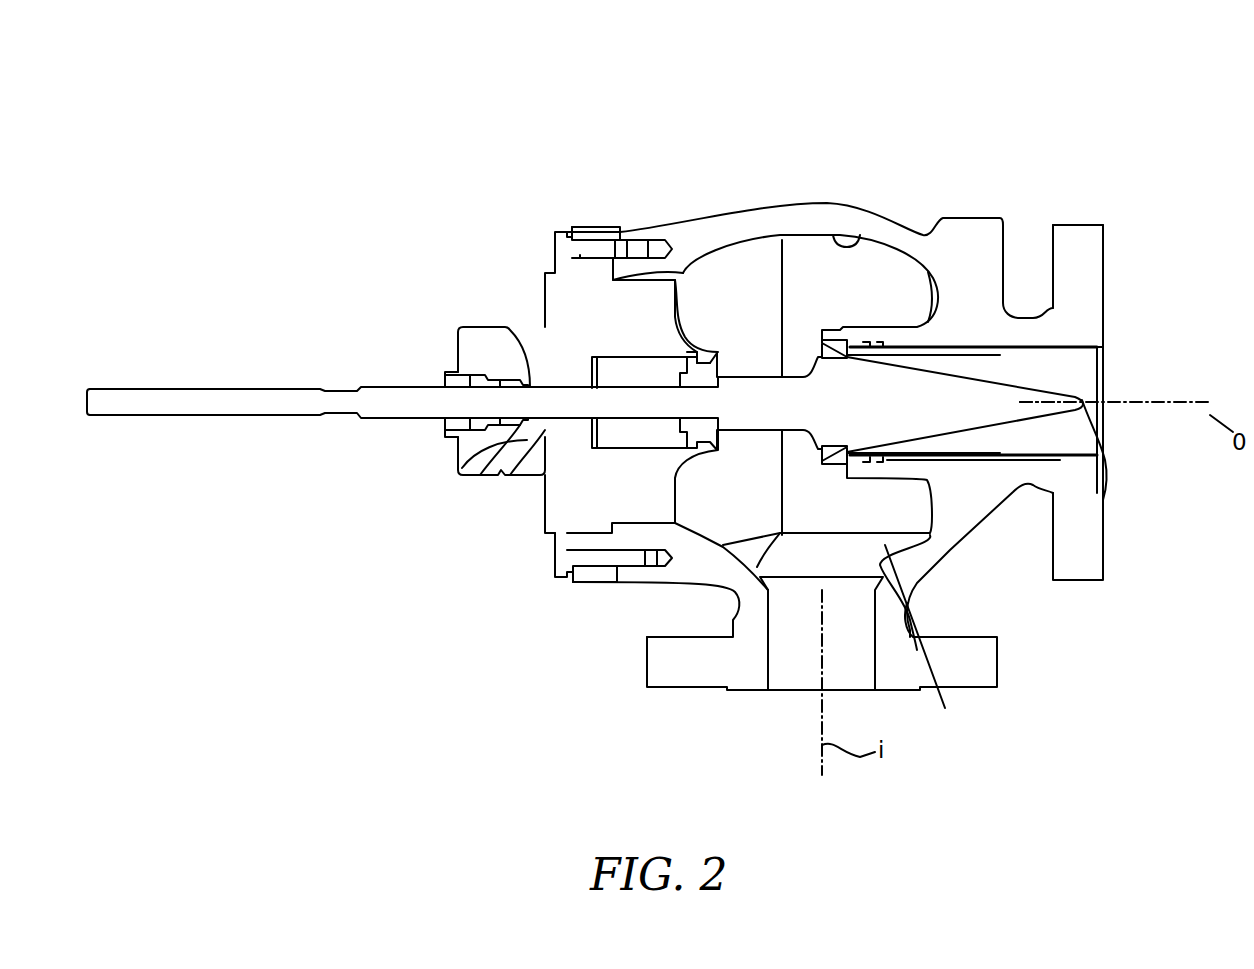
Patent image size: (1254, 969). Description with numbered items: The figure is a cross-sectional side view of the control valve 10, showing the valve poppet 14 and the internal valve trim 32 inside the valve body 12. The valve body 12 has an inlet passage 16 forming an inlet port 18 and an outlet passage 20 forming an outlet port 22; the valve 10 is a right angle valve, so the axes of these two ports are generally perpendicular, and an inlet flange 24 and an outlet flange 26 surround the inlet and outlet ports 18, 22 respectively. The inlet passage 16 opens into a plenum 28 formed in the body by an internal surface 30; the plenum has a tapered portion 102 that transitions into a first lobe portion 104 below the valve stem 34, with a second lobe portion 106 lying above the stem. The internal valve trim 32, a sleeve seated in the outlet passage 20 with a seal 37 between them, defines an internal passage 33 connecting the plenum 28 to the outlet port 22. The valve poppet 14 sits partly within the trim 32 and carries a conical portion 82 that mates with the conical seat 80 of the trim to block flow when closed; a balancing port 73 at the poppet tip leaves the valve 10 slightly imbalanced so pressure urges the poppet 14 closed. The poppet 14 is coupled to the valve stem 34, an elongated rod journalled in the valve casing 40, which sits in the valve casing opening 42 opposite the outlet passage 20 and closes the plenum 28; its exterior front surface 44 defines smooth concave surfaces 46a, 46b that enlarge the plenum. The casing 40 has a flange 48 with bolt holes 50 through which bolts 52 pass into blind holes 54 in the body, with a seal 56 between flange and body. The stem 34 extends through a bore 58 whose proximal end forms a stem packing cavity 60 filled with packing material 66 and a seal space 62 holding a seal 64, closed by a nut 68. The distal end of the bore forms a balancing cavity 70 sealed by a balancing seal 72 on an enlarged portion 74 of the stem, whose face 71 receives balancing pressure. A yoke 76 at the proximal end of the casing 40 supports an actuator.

The valve 10 is at (860, 114).
The valve body 12 is at (707, 243).
The valve poppet 14 is at (913, 420).
The inlet passage 16 is at (767, 660).
The inlet port 18 is at (833, 690).
The outlet passage 20 is at (1105, 353).
The outlet port 22 is at (1103, 403).
The inlet flange 24 is at (665, 688).
The outlet flange 26 is at (1103, 253).
The plenum 28 is at (820, 323).
The internal surface 30 is at (870, 237).
The internal valve trim 32 is at (980, 460).
The internal passage 33 is at (1078, 385).
The valve stem 34 is at (387, 397).
The seal 37 is at (1107, 490).
The valve casing 40 is at (565, 325).
The valve casing opening 42 is at (636, 290).
The exterior front surface 44 is at (683, 335).
The smooth concave surface 46a is at (677, 493).
The smooth concave surface 46b is at (692, 343).
The flange 48 is at (593, 582).
The bolt holes 50 is at (617, 583).
The bolts 52 is at (552, 240).
The blind holes 54 is at (660, 567).
The seal 56 is at (627, 257).
The bore 58 is at (545, 483).
The stem packing cavity 60 is at (527, 440).
The seal space 62 is at (500, 327).
The seal 64 is at (520, 450).
The packing material 66 is at (460, 470).
The nut 68 is at (447, 373).
The balancing cavity 70 is at (638, 443).
The face 71 is at (677, 433).
The balancing seal 72 is at (713, 350).
The balancing port 73 is at (1103, 453).
The enlarged portion 74 is at (720, 370).
The yoke 76 is at (475, 330).
The conical seat 80 is at (822, 455).
The conical portion 82 is at (848, 332).
The tapered portion 102 is at (932, 640).
The first lobe portion 104 is at (773, 520).
The second lobe portion 106 is at (832, 280).